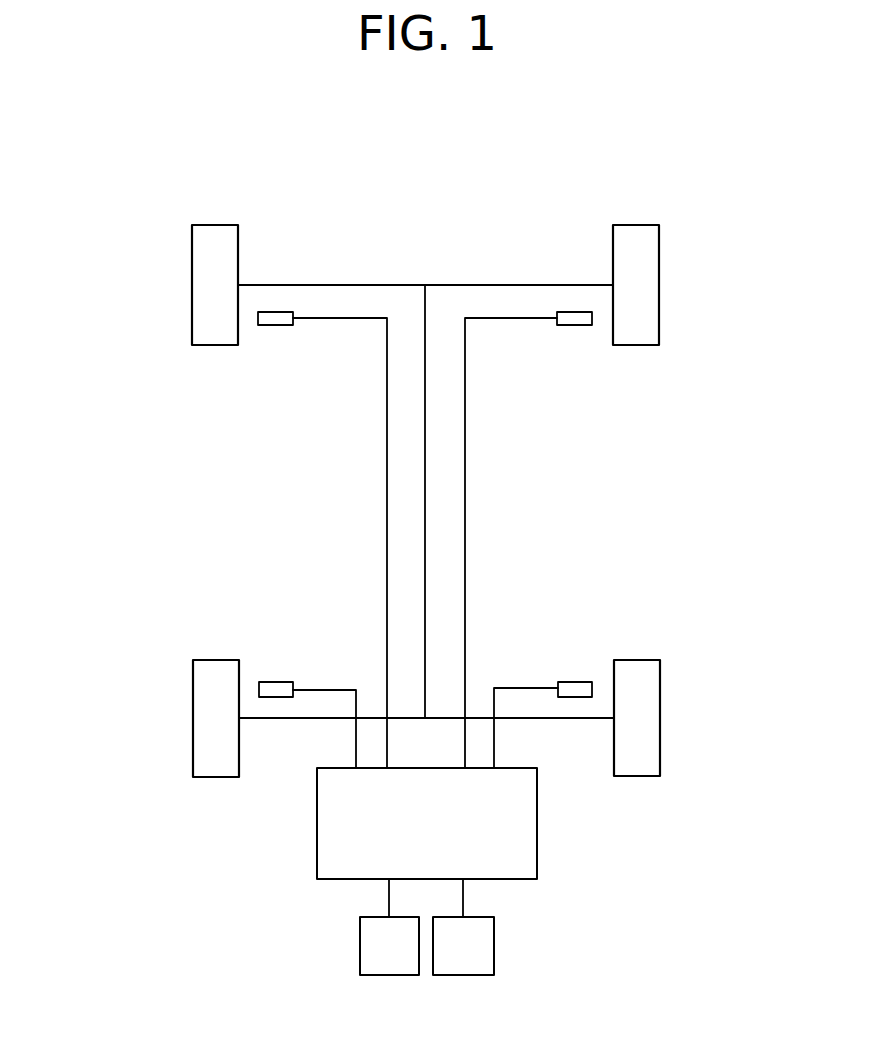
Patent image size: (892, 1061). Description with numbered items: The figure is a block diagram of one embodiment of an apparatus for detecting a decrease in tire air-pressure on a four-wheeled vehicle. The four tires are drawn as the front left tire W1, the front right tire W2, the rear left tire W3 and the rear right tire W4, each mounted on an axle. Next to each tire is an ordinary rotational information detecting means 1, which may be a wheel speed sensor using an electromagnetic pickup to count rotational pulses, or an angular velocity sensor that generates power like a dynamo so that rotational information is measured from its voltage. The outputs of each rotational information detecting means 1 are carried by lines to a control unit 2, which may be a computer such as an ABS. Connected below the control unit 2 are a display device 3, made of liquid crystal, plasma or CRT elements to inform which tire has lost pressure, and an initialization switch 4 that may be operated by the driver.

The rotational information detecting means 1 is at (270, 318).
The control unit 2 is at (524, 861).
The display device 3 is at (370, 936).
The initialization switch 4 is at (483, 939).
The front left tire W1 is at (205, 261).
The front right tire W2 is at (643, 263).
The rear left tire W3 is at (205, 703).
The rear right tire W4 is at (645, 706).